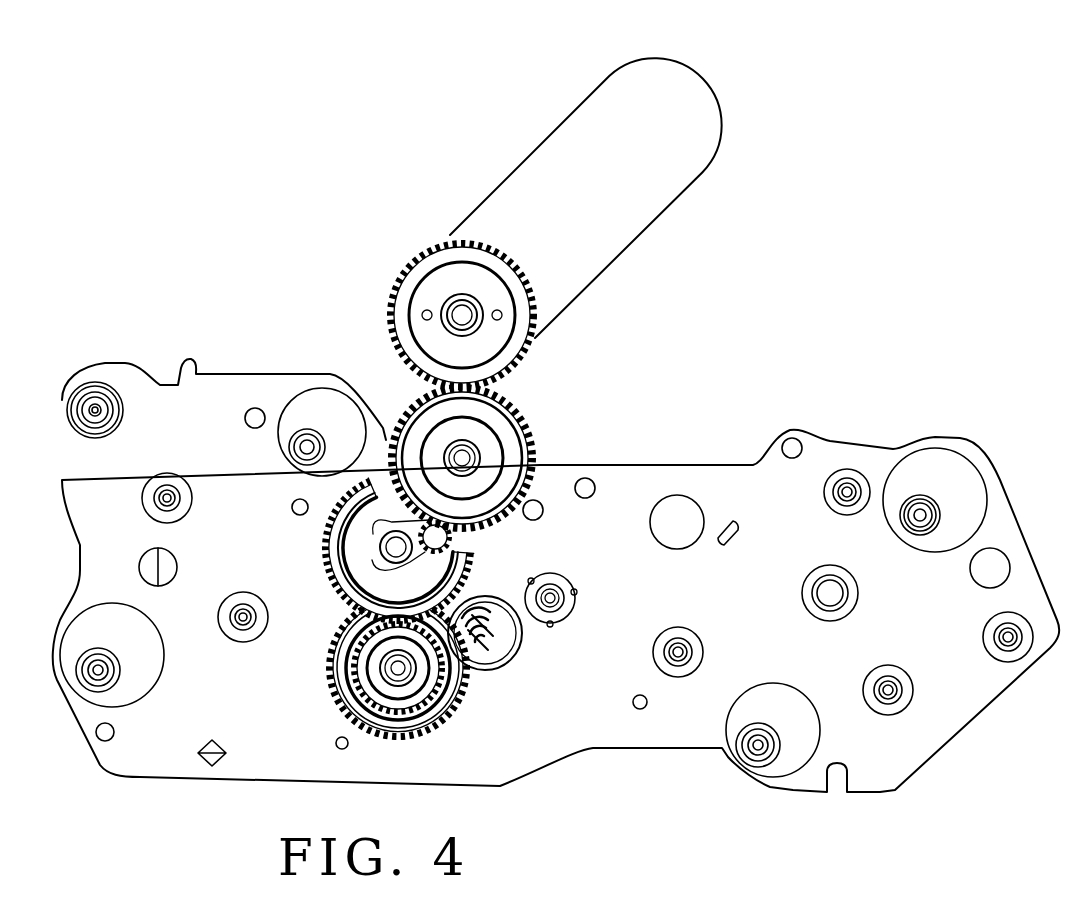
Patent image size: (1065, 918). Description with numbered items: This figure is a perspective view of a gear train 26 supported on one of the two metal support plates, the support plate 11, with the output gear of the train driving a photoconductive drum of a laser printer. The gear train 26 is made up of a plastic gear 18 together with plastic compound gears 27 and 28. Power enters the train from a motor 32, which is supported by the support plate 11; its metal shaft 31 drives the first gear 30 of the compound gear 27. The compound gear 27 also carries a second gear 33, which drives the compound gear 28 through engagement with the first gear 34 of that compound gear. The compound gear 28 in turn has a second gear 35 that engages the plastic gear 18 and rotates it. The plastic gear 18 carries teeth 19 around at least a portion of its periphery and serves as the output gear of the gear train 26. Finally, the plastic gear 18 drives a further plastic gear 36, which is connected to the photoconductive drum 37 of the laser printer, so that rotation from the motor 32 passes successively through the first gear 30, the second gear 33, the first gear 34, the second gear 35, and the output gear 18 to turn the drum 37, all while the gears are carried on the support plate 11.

The support plate 11 is at (657, 758).
The plastic gear 18 is at (512, 444).
The teeth 19 is at (523, 398).
The gear train 26 is at (559, 487).
The compound gear 27 is at (358, 694).
The compound gear 28 is at (307, 562).
The first gear 30 is at (350, 707).
The metal shaft 31 is at (478, 668).
The motor 32 is at (553, 625).
The second gear 33 is at (352, 660).
The first gear 34 is at (351, 549).
The second gear 35 is at (450, 547).
The plastic gear 36 is at (378, 307).
The photoconductive drum 37 is at (625, 257).